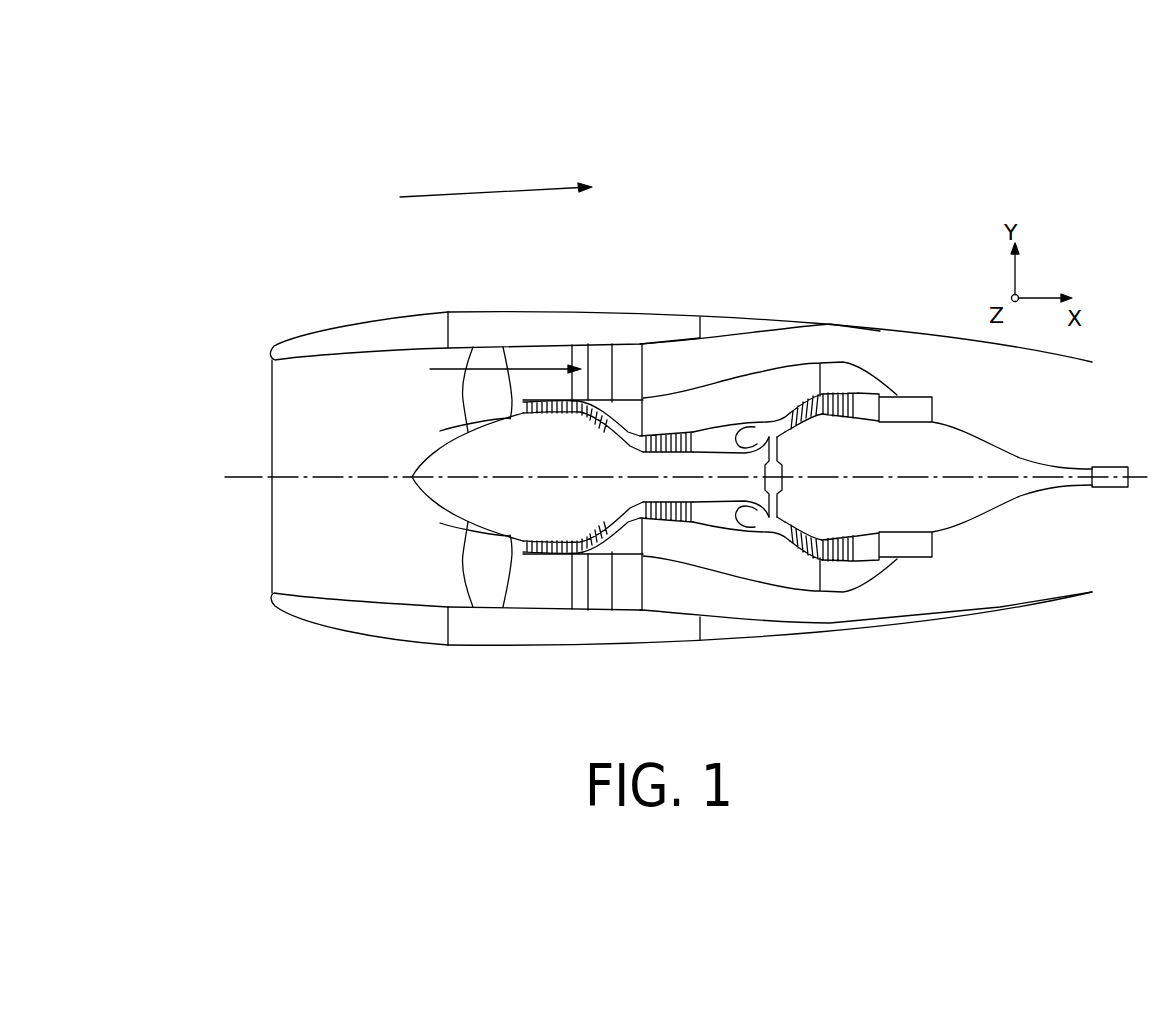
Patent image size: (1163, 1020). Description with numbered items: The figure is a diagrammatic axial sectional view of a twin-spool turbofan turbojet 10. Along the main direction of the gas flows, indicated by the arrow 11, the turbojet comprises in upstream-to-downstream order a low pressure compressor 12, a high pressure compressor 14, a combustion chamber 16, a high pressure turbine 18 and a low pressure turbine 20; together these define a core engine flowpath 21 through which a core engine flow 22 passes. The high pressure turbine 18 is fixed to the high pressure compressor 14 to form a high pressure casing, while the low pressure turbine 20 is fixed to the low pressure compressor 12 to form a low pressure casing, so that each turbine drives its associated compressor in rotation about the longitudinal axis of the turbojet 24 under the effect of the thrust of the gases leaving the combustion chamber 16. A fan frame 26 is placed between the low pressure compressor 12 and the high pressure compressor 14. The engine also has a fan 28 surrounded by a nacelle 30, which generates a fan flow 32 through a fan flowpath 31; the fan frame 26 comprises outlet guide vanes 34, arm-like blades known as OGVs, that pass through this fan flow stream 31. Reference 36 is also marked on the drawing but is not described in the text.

The twin-spool turbofan turbojet 10 is at (663, 459).
The arrow 11 is at (493, 195).
The low pressure compressor 12 is at (555, 553).
The high pressure compressor 14 is at (690, 522).
The combustion chamber 16 is at (745, 520).
The high pressure turbine 18 is at (790, 525).
The low pressure turbine 20 is at (848, 558).
The core engine flowpath 21 is at (643, 427).
The core engine flow 22 is at (442, 432).
The longitudinal axis of the turbojet 24 is at (228, 477).
The fan frame 26 is at (623, 363).
The fan 28 is at (493, 607).
The nacelle 30 is at (467, 311).
The fan flowpath 31 is at (553, 357).
The fan flow 32 is at (430, 369).
The outlet guide vanes 34 is at (632, 606).
The core engine casing 36 is at (660, 413).